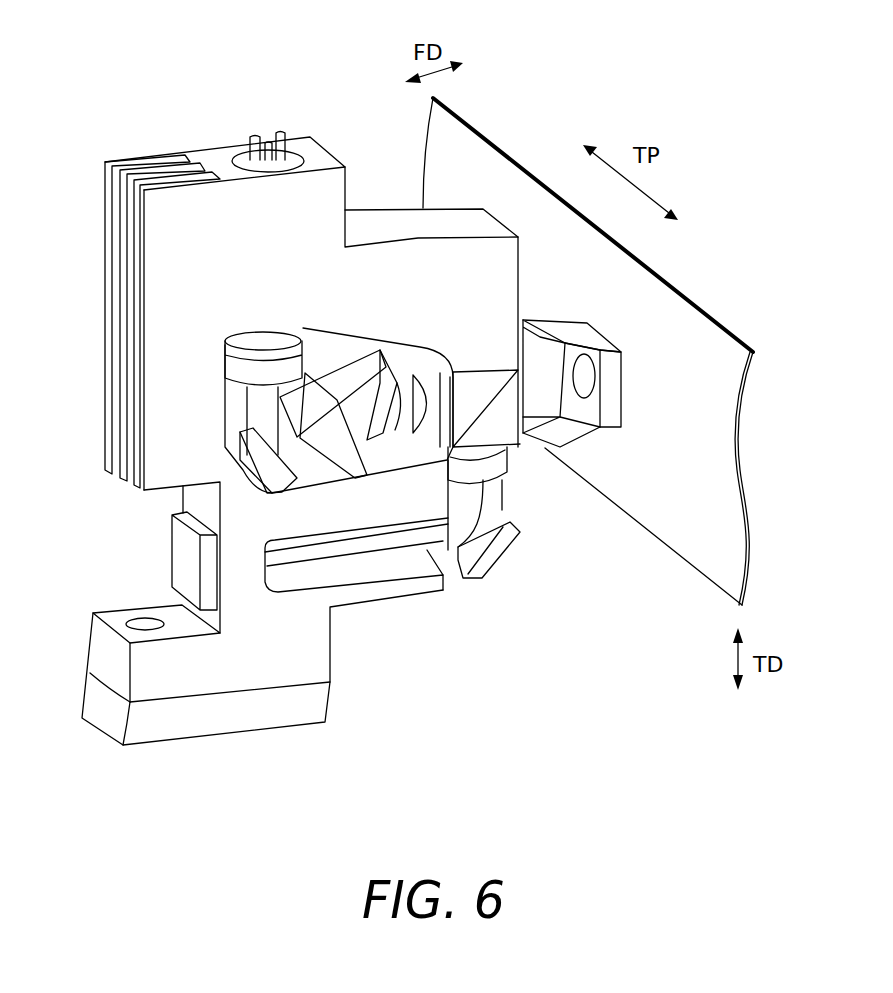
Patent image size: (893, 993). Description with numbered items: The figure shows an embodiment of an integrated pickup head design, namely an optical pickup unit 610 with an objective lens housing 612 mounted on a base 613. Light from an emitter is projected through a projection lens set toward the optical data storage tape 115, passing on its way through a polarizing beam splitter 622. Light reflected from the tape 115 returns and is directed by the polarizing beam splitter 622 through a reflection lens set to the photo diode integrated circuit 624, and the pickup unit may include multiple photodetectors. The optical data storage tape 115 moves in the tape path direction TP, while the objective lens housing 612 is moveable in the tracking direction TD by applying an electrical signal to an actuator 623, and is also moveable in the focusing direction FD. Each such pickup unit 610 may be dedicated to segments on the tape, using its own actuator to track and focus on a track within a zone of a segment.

The optical pickup unit 610 is at (107, 70).
The base 613 is at (157, 366).
The polarizing beam splitter 622 is at (483, 395).
The objective lens housing 612 is at (612, 385).
The optical data storage tape 115 is at (707, 316).
The photo diode integrated circuit 624 is at (183, 557).
The actuator 623 is at (315, 706).